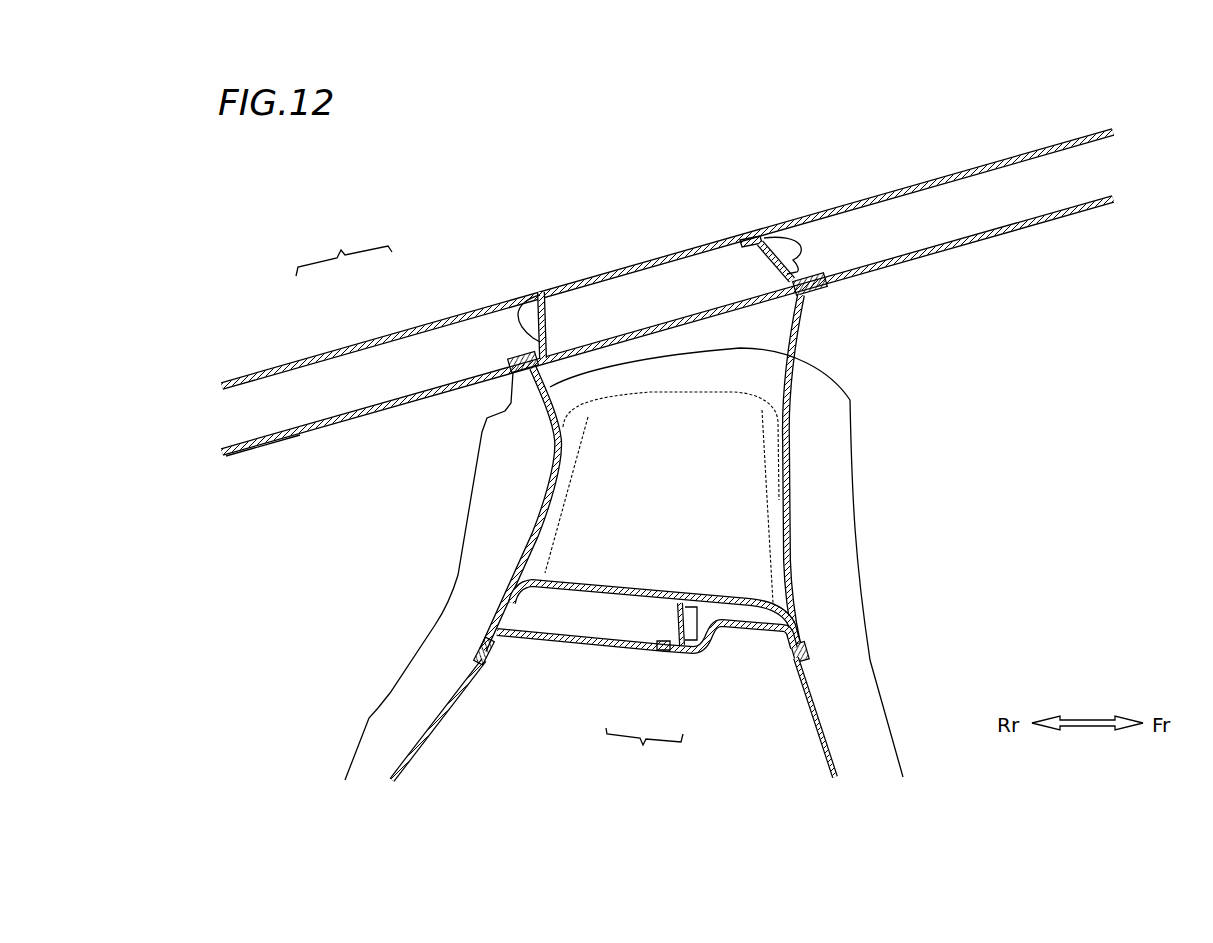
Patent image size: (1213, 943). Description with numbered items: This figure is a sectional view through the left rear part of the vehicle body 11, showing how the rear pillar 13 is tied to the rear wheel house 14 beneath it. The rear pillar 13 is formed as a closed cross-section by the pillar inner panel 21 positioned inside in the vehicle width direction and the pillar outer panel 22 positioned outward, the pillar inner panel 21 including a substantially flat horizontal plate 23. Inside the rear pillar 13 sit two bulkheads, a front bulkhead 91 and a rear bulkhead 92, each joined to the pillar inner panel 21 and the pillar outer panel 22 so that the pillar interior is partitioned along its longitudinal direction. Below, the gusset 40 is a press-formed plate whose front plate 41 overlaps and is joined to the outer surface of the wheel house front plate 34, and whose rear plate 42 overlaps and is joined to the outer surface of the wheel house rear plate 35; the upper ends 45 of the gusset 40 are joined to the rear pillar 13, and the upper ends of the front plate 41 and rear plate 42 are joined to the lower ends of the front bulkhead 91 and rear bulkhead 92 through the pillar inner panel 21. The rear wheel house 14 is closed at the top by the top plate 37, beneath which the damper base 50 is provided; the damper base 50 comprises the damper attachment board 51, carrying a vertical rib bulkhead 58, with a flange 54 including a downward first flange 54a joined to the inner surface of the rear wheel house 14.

The vehicle body 11 is at (447, 193).
The rear pillar 13 is at (344, 252).
The pillar inner panel 21 is at (307, 413).
The pillar outer panel 22 is at (375, 332).
The horizontal plate 23 is at (341, 420).
The rear bulkhead 92 is at (550, 318).
The front bulkhead 91 is at (780, 237).
The upper end of gusset 45 is at (513, 375).
The gusset 40 is at (535, 507).
The front plate 41 is at (788, 490).
The rear plate 42 is at (522, 556).
The top plate 37 is at (758, 552).
The rear plate 35 is at (463, 677).
The rear wheel house 14 is at (417, 740).
The first flange 54a is at (493, 655).
The flange 54 is at (508, 690).
The damper attachment board 51 is at (632, 650).
The bulkhead 58 is at (687, 655).
The damper base 50 is at (645, 687).
The front plate 34 is at (813, 687).